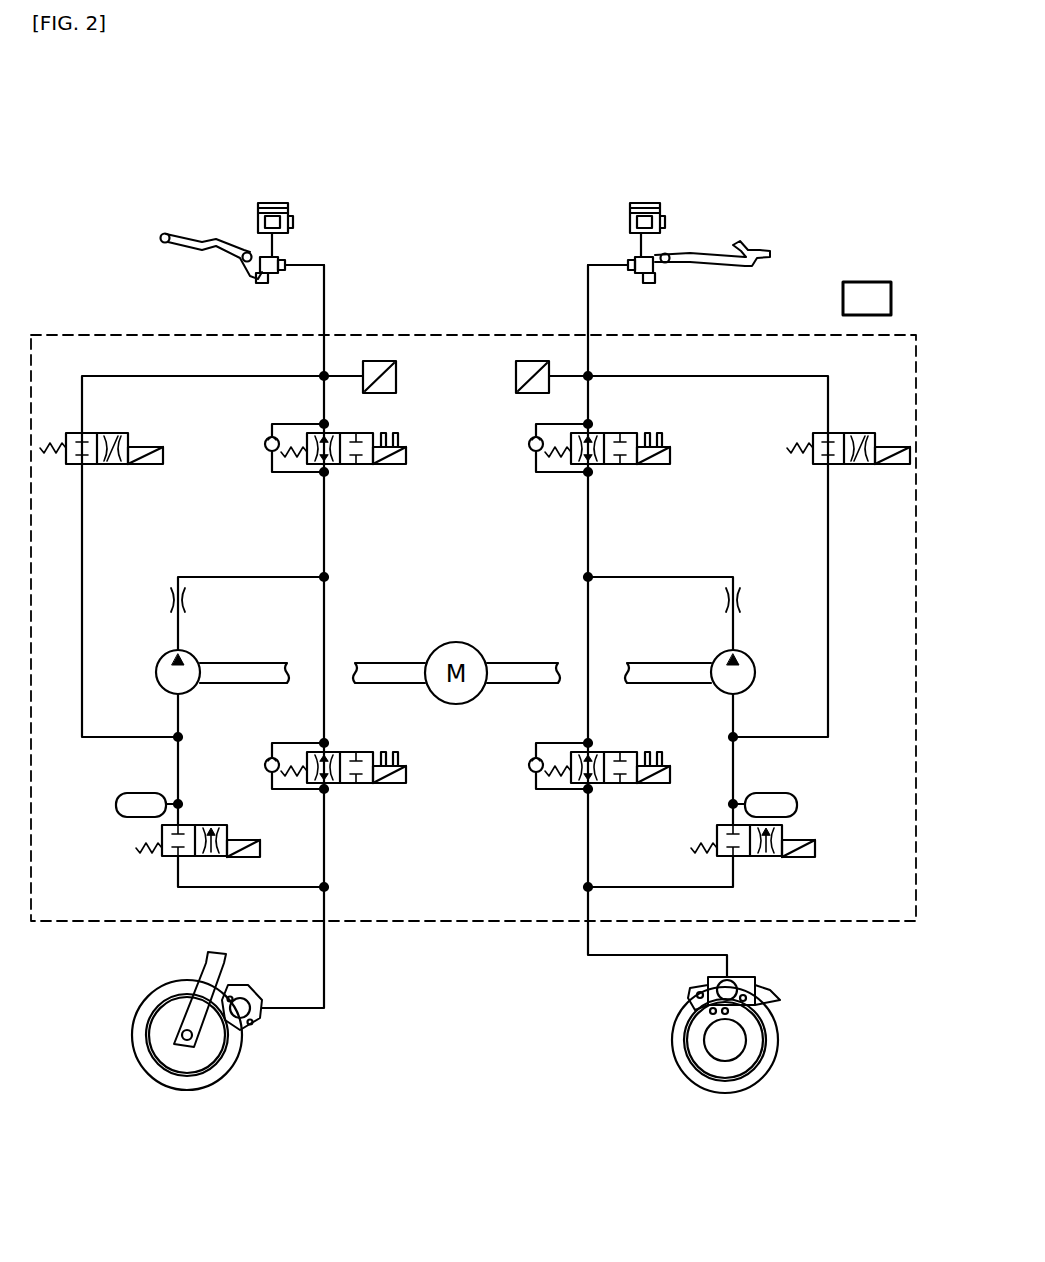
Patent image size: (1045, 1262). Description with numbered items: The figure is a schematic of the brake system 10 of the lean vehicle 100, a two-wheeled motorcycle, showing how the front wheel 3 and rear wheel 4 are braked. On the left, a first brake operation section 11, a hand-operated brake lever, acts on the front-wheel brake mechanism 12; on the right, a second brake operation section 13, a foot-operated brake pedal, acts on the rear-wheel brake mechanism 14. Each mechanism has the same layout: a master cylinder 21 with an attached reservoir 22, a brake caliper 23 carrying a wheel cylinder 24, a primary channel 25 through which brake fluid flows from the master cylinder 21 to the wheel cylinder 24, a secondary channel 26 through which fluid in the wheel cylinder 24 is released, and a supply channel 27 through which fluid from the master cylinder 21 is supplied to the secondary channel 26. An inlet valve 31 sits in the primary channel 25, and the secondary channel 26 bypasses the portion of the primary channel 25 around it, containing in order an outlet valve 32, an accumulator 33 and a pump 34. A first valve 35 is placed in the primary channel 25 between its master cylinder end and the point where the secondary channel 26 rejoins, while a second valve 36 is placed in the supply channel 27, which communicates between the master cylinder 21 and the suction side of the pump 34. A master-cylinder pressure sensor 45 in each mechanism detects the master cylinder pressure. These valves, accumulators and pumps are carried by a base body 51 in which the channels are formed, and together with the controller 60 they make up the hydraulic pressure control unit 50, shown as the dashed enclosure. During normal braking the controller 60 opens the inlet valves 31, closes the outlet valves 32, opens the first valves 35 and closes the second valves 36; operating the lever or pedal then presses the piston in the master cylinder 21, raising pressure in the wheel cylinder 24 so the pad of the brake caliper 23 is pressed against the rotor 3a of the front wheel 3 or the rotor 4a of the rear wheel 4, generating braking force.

The lean vehicle 100 is at (648, 88).
The brake system 10 is at (113, 229).
The first brake operation section 11 is at (189, 244).
The front-wheel brake mechanism 12 is at (368, 148).
The second brake operation section 13 is at (743, 245).
The rear-wheel brake mechanism 14 is at (546, 148).
The master cylinder 21 is at (272, 283).
The reservoir 22 is at (274, 202).
The brake caliper 23 is at (250, 988).
The wheel cylinder 24 is at (252, 1012).
The primary channel 25 is at (324, 511).
The secondary channel 26 is at (250, 576).
The supply channel 27 is at (225, 378).
The inlet valve 31 is at (362, 786).
The outlet valve 32 is at (216, 824).
The accumulator 33 is at (141, 792).
The pump 34 is at (156, 672).
The first valve 35 is at (390, 466).
The second valve 36 is at (128, 466).
The master-cylinder pressure sensor 45 is at (396, 380).
The hydraulic pressure control unit 50 is at (812, 228).
The base body 51 is at (804, 335).
The controller 60 is at (863, 282).
The front wheel 3 is at (215, 1064).
The rotor 3a is at (228, 1063).
The rear wheel 4 is at (696, 1081).
The rotor 4a is at (684, 1064).